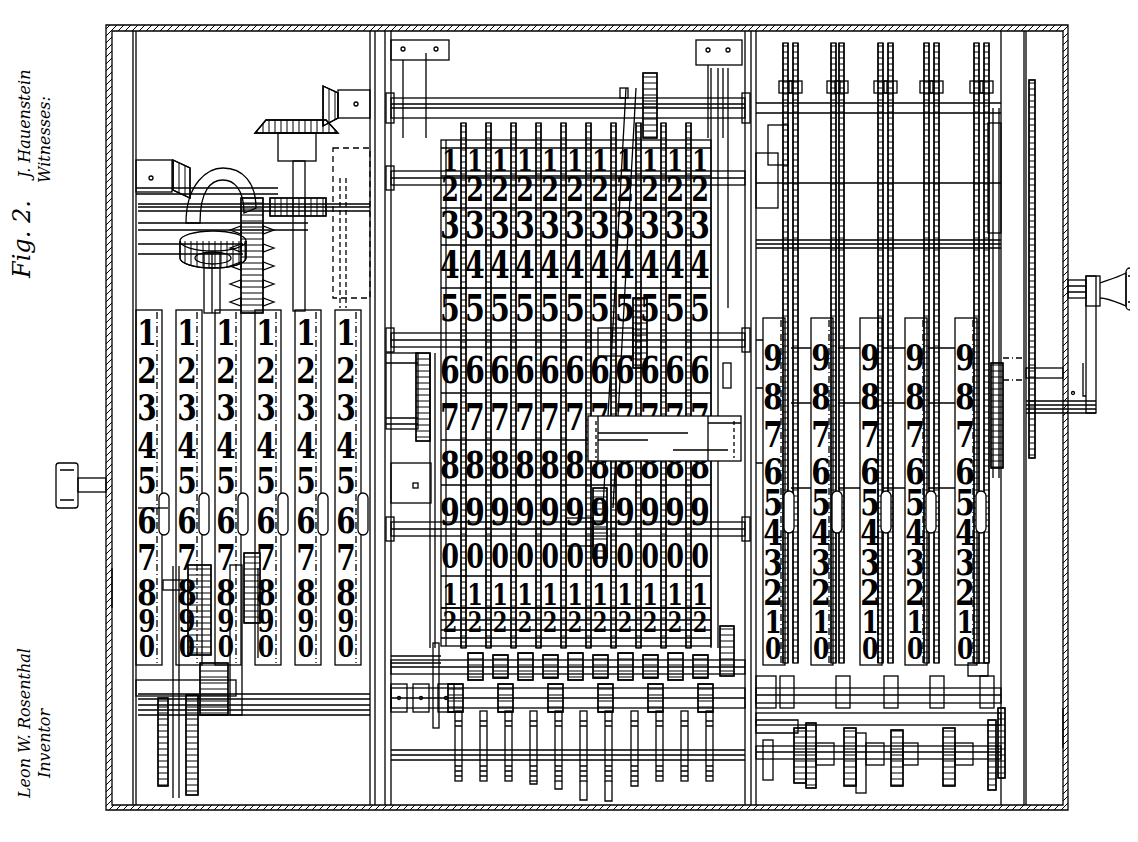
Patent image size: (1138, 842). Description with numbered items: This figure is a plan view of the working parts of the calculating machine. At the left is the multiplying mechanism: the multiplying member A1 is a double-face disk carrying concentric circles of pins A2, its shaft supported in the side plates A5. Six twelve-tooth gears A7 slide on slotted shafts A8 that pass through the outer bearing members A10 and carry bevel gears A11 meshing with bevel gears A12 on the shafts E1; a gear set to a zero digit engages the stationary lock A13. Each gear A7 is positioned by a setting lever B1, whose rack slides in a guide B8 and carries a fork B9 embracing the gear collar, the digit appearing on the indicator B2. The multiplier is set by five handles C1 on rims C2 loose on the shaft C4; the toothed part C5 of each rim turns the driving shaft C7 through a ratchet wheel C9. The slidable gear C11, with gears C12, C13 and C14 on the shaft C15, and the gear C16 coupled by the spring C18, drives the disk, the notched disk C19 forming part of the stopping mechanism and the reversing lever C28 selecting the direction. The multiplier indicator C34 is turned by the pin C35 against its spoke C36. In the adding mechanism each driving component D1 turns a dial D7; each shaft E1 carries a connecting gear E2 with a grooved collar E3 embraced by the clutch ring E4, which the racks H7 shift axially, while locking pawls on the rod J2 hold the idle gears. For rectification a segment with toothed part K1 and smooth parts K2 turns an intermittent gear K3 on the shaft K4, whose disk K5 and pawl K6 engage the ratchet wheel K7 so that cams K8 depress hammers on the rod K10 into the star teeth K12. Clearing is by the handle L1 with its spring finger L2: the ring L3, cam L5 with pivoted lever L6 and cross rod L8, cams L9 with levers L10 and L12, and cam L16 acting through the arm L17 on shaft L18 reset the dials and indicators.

The multiplying member A1 is at (250, 272).
The pins A2 is at (268, 238).
The plates A5 is at (100, 570).
The twelve-tooth gears A7 is at (300, 206).
The slotted shafts A8 is at (198, 285).
The outer bearing members A10 is at (290, 155).
The bevel gears A11 is at (288, 118).
The bevel gears A12 is at (318, 92).
The stationary lock A13 is at (352, 198).
The setting lever B1 is at (153, 500).
The indicator B2 is at (128, 373).
The guide B8 is at (340, 285).
The fork B9 is at (310, 178).
The handle C1 is at (978, 505).
The rim C2 is at (882, 283).
The shaft C4 is at (1070, 403).
The toothed part C5 is at (785, 720).
The driving shaft C7 is at (318, 696).
The ratchet wheel C9 is at (975, 668).
The gear C11 is at (190, 760).
The gear C12 is at (200, 598).
The gear C13 is at (210, 700).
The gear C14 is at (190, 585).
The shaft C15 is at (172, 572).
The gear C16 is at (252, 650).
The spring C18 is at (232, 555).
The notched disk C19 is at (150, 768).
The reversing lever C28 is at (72, 460).
The multiplier indicator C34 is at (956, 300).
The pin C35 is at (818, 80).
The spoke C36 is at (812, 285).
The driving component D1 is at (552, 110).
The dial D7 is at (440, 592).
The shaft E1 is at (475, 95).
The connecting gear E2 is at (650, 80).
The grooved collar E3 is at (632, 88).
The clutch ring E4 is at (615, 108).
The rack H7 is at (664, 438).
The rod J2 is at (405, 655).
The toothed part K1 is at (846, 720).
The smooth peripheral parts K2 is at (840, 668).
The intermittent gears K3 is at (793, 770).
The shaft K4 is at (768, 748).
The disk K5 is at (851, 768).
The pawl K6 is at (948, 762).
The ratchet wheel K7 is at (900, 762).
The cams K8 is at (520, 778).
The rod K10 is at (397, 698).
The star teeth K12 is at (440, 233).
The clearing handle L1 is at (1105, 275).
The spring finger L2 is at (1068, 268).
The ring L3 is at (1024, 74).
The cam L5 is at (418, 430).
The pivoted lever L6 is at (425, 455).
The cross rod L8 is at (438, 716).
The cams L9 is at (416, 378).
The levers L10 is at (732, 80).
The levers L12 is at (440, 80).
The cam L16 is at (995, 445).
The arm L17 is at (990, 255).
The shaft L18 is at (853, 230).